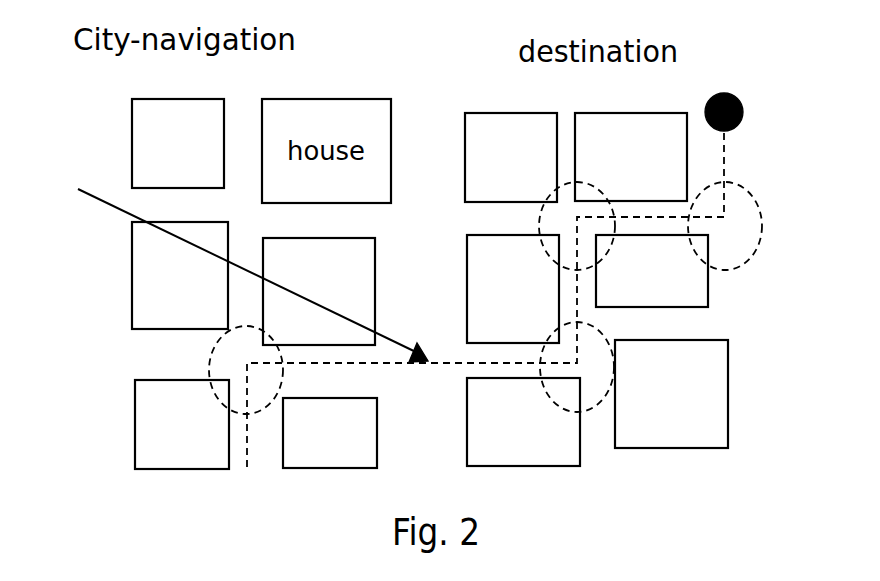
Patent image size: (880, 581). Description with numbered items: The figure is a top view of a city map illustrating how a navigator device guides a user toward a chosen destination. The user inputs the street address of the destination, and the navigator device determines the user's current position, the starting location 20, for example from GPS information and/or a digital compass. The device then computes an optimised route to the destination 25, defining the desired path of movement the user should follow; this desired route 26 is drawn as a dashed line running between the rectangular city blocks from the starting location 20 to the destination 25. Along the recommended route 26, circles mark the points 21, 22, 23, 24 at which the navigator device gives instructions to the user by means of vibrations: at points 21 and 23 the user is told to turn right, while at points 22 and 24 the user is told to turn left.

The starting location 20 is at (242, 468).
The turn-right instruction point 21 is at (210, 355).
The turn-left instruction point 22 is at (597, 329).
The turn-right instruction point 23 is at (610, 212).
The turn-left instruction point 24 is at (762, 213).
The destination 25 is at (742, 107).
The desired route 26 is at (226, 253).